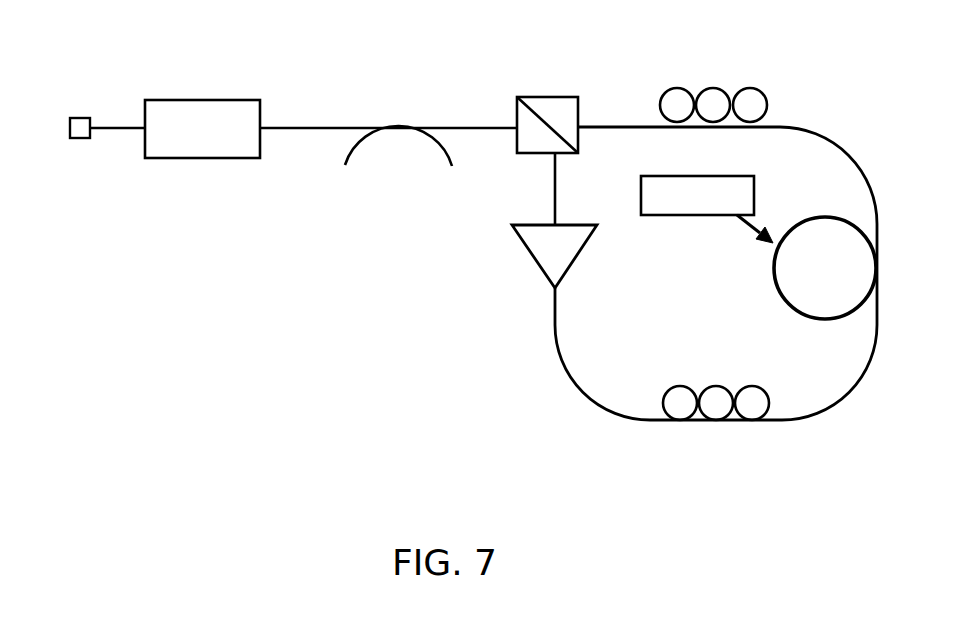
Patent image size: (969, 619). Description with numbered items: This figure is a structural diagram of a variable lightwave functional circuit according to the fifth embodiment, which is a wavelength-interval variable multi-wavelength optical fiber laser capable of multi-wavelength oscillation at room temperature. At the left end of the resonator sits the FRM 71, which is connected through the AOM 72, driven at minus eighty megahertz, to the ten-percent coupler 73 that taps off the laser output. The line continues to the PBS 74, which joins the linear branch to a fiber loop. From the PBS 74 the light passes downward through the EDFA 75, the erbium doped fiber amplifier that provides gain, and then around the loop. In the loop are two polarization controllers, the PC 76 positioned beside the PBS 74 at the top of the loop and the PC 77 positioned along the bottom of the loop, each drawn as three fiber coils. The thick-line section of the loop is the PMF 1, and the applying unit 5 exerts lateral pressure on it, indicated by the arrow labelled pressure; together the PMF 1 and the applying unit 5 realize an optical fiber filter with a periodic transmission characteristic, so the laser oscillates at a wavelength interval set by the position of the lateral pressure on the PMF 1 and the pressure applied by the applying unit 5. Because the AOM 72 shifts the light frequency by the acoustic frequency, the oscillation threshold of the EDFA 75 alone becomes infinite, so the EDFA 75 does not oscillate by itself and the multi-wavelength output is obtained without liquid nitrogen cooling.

The PMF 1 is at (825, 318).
The applying unit 5 is at (690, 176).
The FRM 71 is at (73, 141).
The AOM 72 is at (168, 100).
The 10%-coupler 73 is at (398, 127).
The PBS 74 is at (582, 112).
The EDFA 75 is at (562, 223).
The PC 76 is at (703, 88).
The PC 77 is at (728, 423).